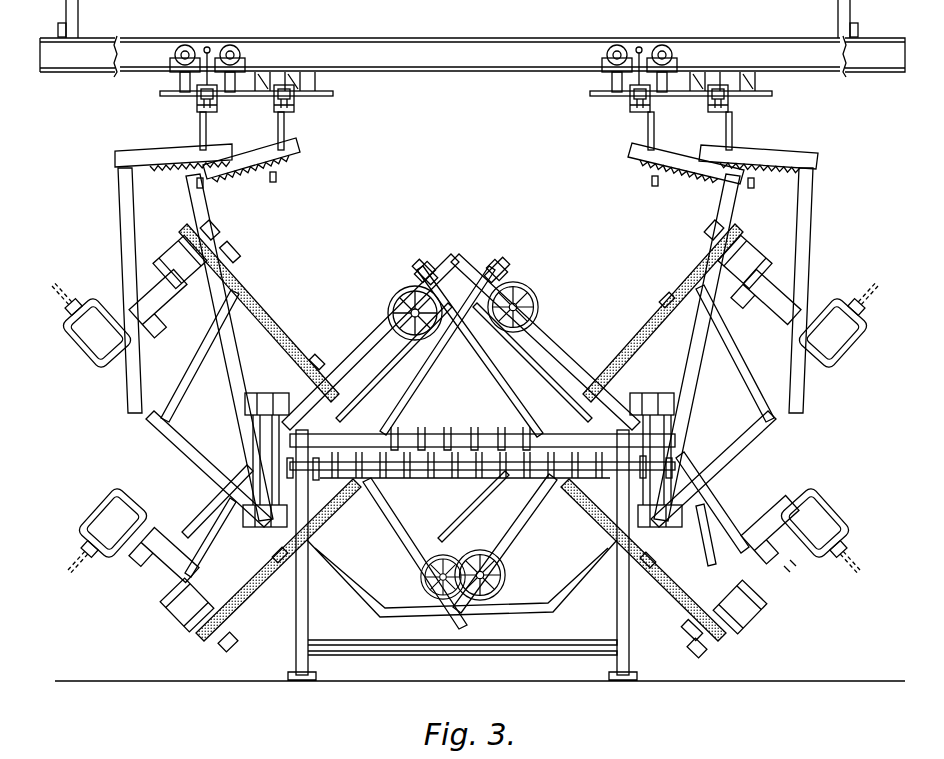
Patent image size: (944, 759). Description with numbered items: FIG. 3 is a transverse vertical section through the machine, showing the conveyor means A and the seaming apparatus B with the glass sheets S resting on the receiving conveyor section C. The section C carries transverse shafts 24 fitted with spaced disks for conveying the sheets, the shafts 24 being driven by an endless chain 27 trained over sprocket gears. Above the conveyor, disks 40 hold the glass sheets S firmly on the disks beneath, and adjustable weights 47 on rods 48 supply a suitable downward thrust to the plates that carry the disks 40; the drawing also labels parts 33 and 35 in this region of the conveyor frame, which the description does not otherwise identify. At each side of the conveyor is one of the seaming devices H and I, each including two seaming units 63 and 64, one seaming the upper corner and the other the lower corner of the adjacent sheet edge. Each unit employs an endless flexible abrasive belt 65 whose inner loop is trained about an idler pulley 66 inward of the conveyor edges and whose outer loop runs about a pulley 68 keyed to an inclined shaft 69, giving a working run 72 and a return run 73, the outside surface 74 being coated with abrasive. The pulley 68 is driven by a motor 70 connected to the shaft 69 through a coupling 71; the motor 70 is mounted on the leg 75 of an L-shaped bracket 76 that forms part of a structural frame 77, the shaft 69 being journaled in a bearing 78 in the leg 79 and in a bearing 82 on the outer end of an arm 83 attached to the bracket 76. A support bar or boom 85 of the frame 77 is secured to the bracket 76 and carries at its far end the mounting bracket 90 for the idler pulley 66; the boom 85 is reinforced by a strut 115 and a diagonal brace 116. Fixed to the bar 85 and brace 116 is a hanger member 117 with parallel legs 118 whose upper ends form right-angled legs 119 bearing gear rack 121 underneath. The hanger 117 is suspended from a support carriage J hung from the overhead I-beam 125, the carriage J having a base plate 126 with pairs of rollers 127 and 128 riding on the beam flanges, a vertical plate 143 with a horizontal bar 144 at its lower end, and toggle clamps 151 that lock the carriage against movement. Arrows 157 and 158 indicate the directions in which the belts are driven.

The shafts 24 is at (428, 482).
The endless chain 27 is at (675, 472).
The bracket 33 is at (698, 481).
The upright post 35 is at (277, 515).
The disks 40 is at (398, 432).
The adjustable weights 47 is at (668, 530).
The rods 48 is at (668, 432).
The seaming unit 63 is at (300, 180).
The seaming unit 64 is at (152, 423).
The abrasive belt 65 is at (680, 592).
The pulley 66 is at (505, 577).
The pulley 68 is at (748, 612).
The pulley shaft 69 is at (766, 592).
The motor 70 is at (832, 527).
The coupling 71 is at (797, 566).
The working run 72 is at (480, 507).
The return run 73 is at (517, 531).
The outside surface 74 is at (319, 369).
The leg 75 is at (795, 490).
The L-shaped bracket 76 is at (155, 322).
The structural frame 77 is at (170, 441).
The bearing 78 is at (782, 578).
The leg 79 is at (811, 607).
The bearing 82 is at (700, 650).
The arm 83 is at (684, 632).
The support bar 85 is at (752, 434).
The mounting bracket 90 is at (420, 266).
The strut 115 is at (702, 548).
The brace 116 is at (718, 524).
The hanger member 117 is at (207, 203).
The legs 118 is at (685, 376).
The legs 119 is at (762, 158).
The gear rack 121 is at (752, 174).
The I-beam 125 is at (458, 52).
The base plate 126 is at (772, 93).
The rollers 127 is at (617, 46).
The rollers 128 is at (664, 46).
The plate 143 is at (654, 138).
The horizontal bar 144 is at (656, 186).
The toggle clamps 151 is at (198, 103).
The arrow 157 is at (554, 512).
The arrow 158 is at (620, 332).
The conveyor means A is at (313, 590).
The seaming apparatus B is at (478, 228).
The receiving conveyor section C is at (618, 598).
The seaming device H is at (112, 268).
The seaming device I is at (373, 343).
The support carriage J is at (165, 103).
The glass sheets S is at (459, 412).